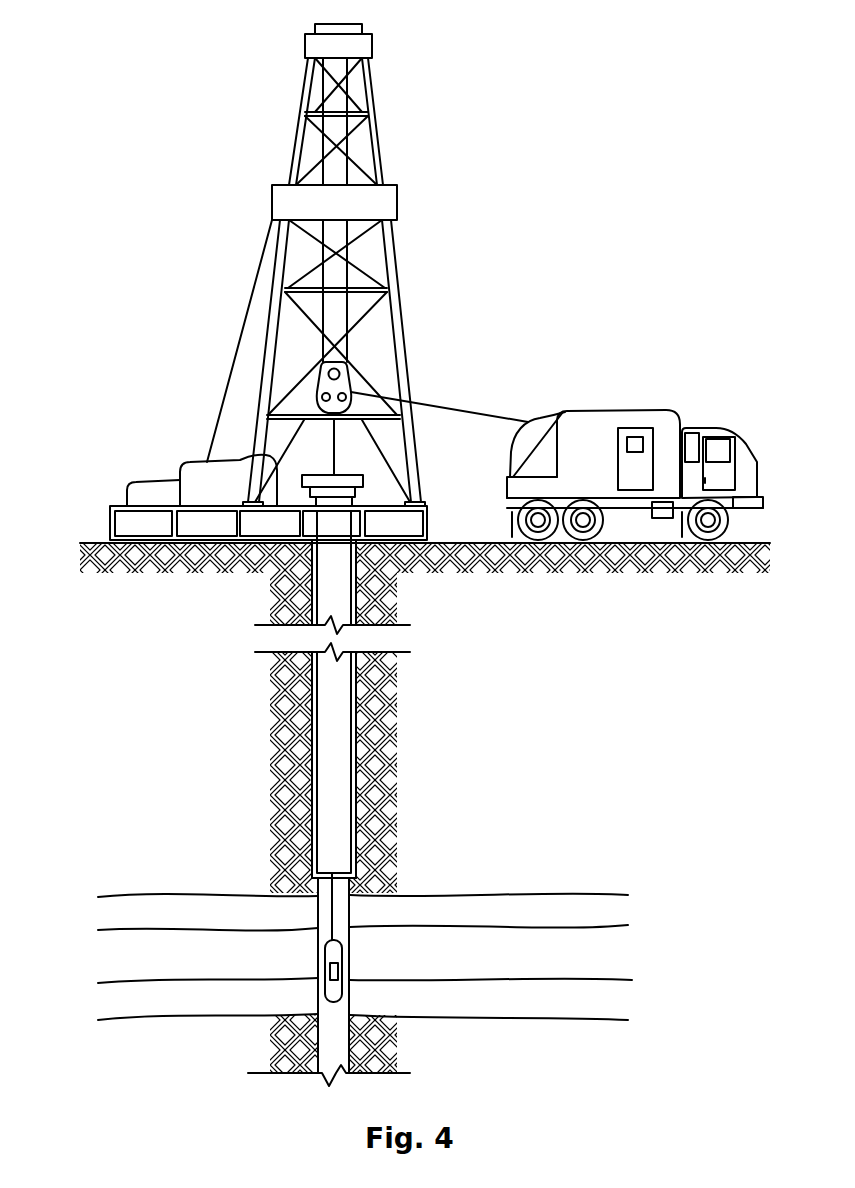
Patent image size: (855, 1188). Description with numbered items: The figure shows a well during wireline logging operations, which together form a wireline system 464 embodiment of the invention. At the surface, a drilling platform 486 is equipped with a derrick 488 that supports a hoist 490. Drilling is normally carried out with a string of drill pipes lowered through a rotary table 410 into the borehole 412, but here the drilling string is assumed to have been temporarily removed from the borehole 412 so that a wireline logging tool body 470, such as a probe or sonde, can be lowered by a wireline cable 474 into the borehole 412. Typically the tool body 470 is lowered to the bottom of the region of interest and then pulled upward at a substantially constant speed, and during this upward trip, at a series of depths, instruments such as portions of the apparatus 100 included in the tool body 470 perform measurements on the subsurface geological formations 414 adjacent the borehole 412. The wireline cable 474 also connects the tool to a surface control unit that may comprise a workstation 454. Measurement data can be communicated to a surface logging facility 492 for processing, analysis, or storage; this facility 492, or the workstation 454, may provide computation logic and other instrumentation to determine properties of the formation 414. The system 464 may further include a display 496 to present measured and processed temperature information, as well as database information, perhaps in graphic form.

The wireline system 464 is at (568, 217).
The hoist 490 is at (348, 360).
The wireline cable 474 is at (445, 403).
The rotary table 410 is at (358, 475).
The derrick 488 is at (406, 503).
The drilling platform 486 is at (428, 527).
The surface logging facility 492 is at (590, 408).
The workstation 454 is at (617, 470).
The display 496 is at (636, 436).
The wireline logging tool body 470 is at (354, 930).
The apparatus 100 is at (339, 970).
The borehole 412 is at (318, 913).
The subsurface geological formations 414 is at (638, 893).